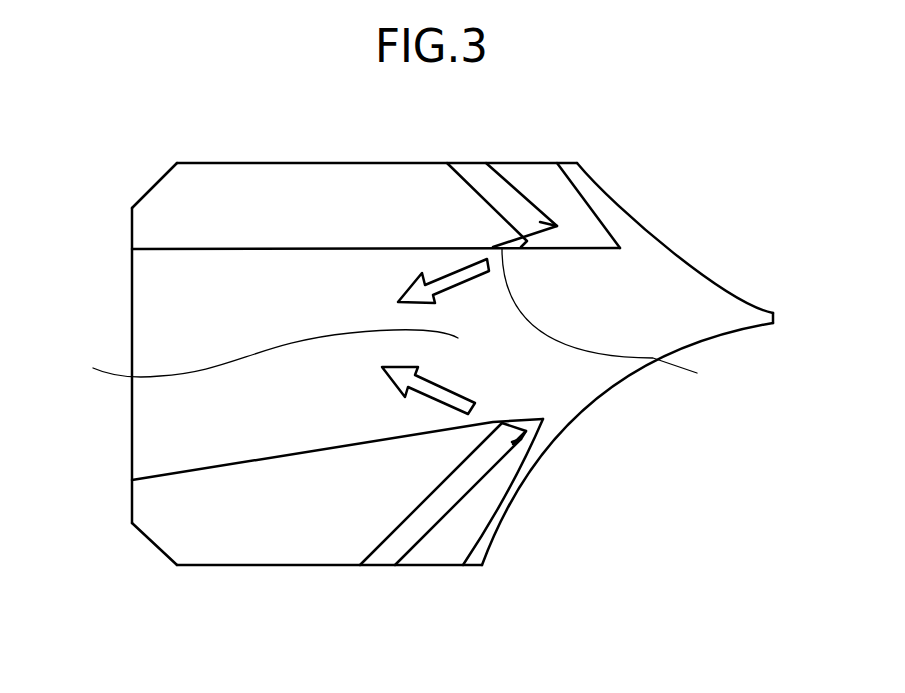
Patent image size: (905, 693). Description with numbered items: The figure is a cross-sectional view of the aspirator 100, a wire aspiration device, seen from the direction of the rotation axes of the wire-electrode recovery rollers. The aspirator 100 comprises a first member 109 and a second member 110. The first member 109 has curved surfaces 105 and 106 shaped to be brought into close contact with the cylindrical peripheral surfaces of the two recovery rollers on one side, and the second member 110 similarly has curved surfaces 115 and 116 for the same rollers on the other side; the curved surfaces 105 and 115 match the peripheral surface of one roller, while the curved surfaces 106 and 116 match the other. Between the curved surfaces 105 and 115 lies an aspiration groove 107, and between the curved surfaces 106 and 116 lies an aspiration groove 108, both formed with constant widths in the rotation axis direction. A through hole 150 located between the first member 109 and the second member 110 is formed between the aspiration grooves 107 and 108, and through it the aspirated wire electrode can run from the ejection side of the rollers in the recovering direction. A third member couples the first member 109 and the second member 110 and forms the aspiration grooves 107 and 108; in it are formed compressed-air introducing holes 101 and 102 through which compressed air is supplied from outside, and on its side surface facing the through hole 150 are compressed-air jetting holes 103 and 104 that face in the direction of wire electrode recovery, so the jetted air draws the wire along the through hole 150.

The aspirator 100 is at (147, 215).
The compressed-air introducing hole 101 is at (473, 175).
The compressed-air introducing hole 102 is at (382, 552).
The compressed-air jetting hole 103 is at (621, 318).
The compressed-air jetting hole 104 is at (503, 422).
The curved surface 105 is at (675, 238).
The curved surface 115 is at (640, 240).
The curved surface 106 is at (627, 444).
The curved surface 116 is at (535, 455).
The aspiration groove 107 is at (590, 200).
The aspiration groove 108 is at (493, 510).
The first member 109 is at (780, 265).
The second member 110 is at (747, 315).
The through hole 150 is at (255, 357).